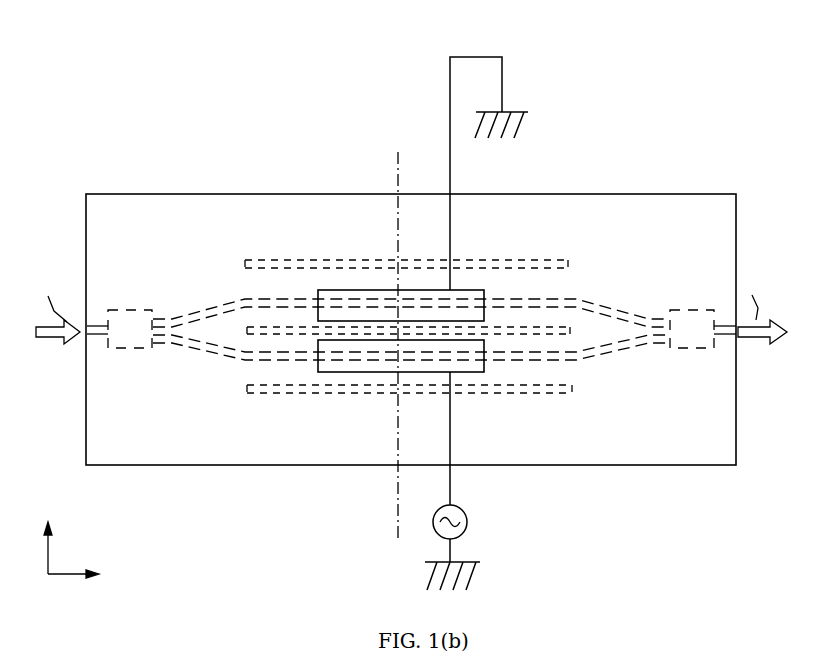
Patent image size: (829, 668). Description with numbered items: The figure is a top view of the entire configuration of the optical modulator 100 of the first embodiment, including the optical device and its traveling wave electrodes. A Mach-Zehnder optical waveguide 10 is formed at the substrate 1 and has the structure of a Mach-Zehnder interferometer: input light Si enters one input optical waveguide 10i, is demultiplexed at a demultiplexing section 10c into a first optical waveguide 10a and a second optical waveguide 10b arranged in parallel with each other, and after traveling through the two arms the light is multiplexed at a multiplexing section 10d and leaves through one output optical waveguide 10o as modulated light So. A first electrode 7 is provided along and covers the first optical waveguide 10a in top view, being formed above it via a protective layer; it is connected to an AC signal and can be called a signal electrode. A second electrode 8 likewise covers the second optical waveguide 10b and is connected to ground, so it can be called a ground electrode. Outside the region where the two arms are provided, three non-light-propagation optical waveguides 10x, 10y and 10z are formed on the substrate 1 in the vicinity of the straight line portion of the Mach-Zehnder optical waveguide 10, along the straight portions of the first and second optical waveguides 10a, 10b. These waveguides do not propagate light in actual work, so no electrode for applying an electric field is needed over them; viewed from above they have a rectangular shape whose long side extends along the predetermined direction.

The substrate 1 is at (100, 194).
The optical modulator 100 is at (598, 127).
The Mach-Zehnder optical waveguide 10 is at (507, 293).
The input optical waveguide 10i is at (103, 335).
The output optical waveguide 10o is at (725, 340).
The demultiplexing section 10c is at (133, 310).
The multiplexing section 10d is at (690, 310).
The first optical waveguide 10a is at (290, 362).
The second optical waveguide 10b is at (293, 297).
The non-light-propagation optical waveguide 10x is at (462, 392).
The non-light-propagation optical waveguide 10y is at (553, 322).
The non-light-propagation optical waveguide 10z is at (318, 262).
The first electrode 7 is at (376, 373).
The second electrode 8 is at (372, 288).